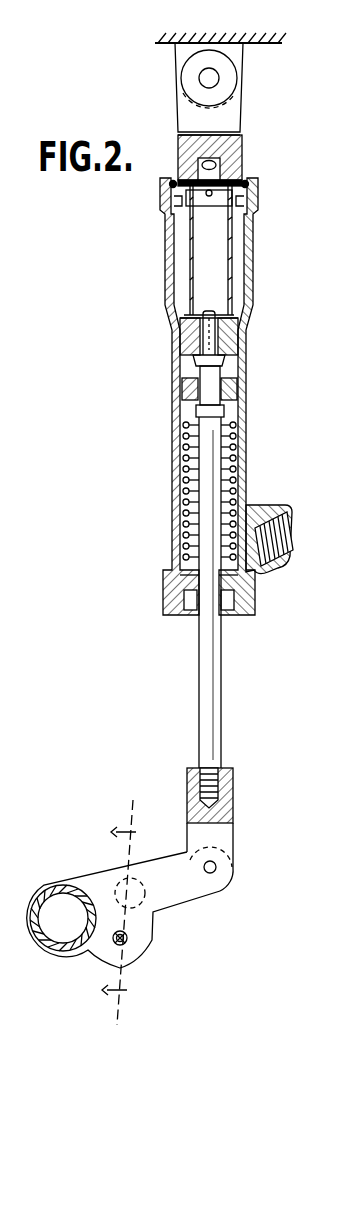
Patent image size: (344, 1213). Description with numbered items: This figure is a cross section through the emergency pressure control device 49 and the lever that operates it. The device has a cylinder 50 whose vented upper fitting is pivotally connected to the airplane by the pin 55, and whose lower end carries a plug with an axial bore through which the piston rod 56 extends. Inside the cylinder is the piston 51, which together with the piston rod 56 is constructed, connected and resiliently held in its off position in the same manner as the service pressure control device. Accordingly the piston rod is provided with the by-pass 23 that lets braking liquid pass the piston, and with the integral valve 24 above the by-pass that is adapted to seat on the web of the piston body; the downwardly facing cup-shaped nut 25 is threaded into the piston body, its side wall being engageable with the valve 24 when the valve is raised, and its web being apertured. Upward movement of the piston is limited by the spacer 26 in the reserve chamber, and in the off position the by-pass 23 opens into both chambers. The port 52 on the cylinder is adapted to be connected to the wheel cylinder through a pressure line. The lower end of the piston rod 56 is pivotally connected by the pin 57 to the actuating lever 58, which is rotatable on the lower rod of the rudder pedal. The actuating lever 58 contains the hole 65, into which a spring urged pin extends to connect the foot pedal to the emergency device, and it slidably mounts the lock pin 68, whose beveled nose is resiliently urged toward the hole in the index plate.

The by-pass 23 is at (256, 396).
The integral valve 24 is at (240, 322).
The cup-shaped nut 25 is at (178, 335).
The spacer 26 is at (232, 242).
The emergency pressure control device 49 is at (252, 342).
The cylinder 50 is at (222, 384).
The piston 51 is at (238, 362).
The port 52 is at (293, 534).
The pin 55 is at (216, 80).
The piston rod 56 is at (222, 728).
The pin 57 is at (217, 867).
The actuating lever 58 is at (157, 866).
The hole 65 is at (121, 878).
The lock pin 68 is at (128, 938).